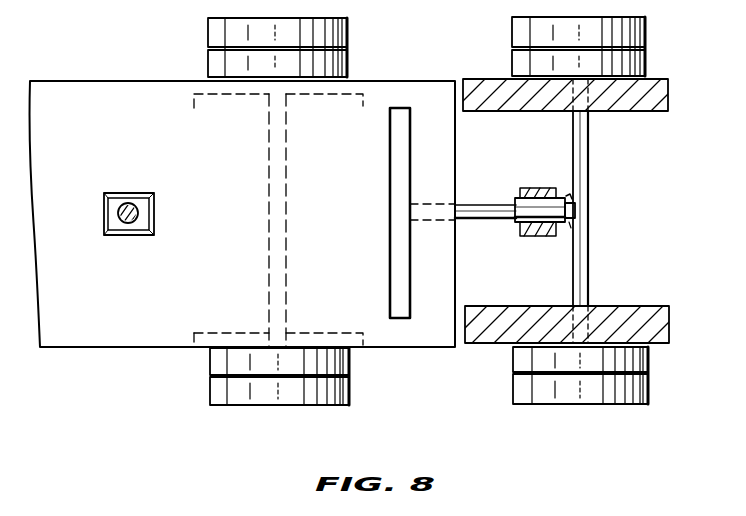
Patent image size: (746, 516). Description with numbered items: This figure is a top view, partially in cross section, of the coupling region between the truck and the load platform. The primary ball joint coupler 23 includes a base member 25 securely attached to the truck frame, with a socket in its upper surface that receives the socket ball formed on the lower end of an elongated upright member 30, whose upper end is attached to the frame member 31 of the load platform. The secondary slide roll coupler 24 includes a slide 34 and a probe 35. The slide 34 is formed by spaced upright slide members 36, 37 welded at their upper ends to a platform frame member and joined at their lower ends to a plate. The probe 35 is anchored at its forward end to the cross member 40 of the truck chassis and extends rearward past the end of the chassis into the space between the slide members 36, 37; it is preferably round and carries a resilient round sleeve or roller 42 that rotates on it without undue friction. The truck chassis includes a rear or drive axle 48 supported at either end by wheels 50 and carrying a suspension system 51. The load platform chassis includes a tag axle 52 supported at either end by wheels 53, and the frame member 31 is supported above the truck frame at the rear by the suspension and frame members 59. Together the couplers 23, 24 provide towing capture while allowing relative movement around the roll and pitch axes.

The primary ball joint coupler 23 is at (137, 193).
The secondary slide roll coupler 24 is at (540, 188).
The base member 25 is at (154, 215).
The elongated upright member 30 is at (135, 223).
The frame member 31 is at (174, 320).
The slide 34 is at (540, 237).
The probe 35 is at (490, 206).
The slide member 36 is at (568, 197).
The slide member 37 is at (571, 222).
The cross member 40 is at (448, 156).
The resilient round sleeve or roller 42 is at (463, 228).
The rear or drive axle 48 is at (287, 306).
The wheels 50 is at (349, 28).
The suspension system 51 is at (262, 92).
The tag axle 52 is at (589, 294).
The wheels 53 is at (646, 28).
The frame members 59 is at (669, 94).